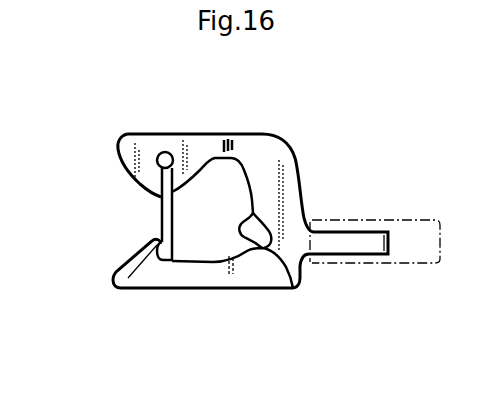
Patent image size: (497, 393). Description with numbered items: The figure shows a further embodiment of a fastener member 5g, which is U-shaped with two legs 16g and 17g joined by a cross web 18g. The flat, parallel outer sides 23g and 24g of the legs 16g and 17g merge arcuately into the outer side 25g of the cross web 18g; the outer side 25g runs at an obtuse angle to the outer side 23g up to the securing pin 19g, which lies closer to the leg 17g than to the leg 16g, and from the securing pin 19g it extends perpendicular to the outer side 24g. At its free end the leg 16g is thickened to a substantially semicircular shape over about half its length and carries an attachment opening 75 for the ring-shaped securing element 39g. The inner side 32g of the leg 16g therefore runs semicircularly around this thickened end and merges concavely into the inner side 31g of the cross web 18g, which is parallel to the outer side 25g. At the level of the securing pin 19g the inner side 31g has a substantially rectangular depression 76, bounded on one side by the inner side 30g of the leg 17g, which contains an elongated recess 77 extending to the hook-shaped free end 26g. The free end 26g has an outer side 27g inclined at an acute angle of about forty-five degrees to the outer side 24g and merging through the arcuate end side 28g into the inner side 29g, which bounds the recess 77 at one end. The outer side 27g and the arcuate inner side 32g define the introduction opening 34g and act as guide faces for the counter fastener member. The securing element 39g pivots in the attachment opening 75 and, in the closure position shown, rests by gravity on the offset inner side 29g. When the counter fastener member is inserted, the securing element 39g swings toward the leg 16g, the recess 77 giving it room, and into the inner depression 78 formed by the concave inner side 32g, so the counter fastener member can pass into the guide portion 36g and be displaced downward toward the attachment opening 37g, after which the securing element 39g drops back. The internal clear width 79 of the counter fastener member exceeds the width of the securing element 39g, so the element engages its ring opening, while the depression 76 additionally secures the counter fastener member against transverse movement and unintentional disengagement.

The internal clear width 79 is at (46, 15).
The attachment opening 75 is at (160, 152).
The leg 16g is at (192, 153).
The fastener member 5g is at (218, 130).
The outer side 23g is at (238, 133).
The inner depression 78 is at (232, 167).
The cross web 18g is at (277, 187).
The outer side 25g is at (297, 190).
The guide portion 36g is at (255, 213).
The inner side 32g is at (120, 158).
The introduction opening 34g is at (136, 195).
The securing element 39g is at (162, 210).
The arcuate end side 28g is at (150, 238).
The inner side 31g is at (241, 237).
The outer side 27g is at (138, 250).
The free end 26g is at (113, 279).
The outer side 24g is at (136, 290).
The inner side 29g is at (166, 263).
The leg 17g is at (195, 275).
The attachment opening 37g is at (187, 250).
The elongated recess 77 is at (229, 259).
The inner side 30g is at (269, 250).
The depression 76 is at (304, 270).
The securing pin 19g is at (388, 254).